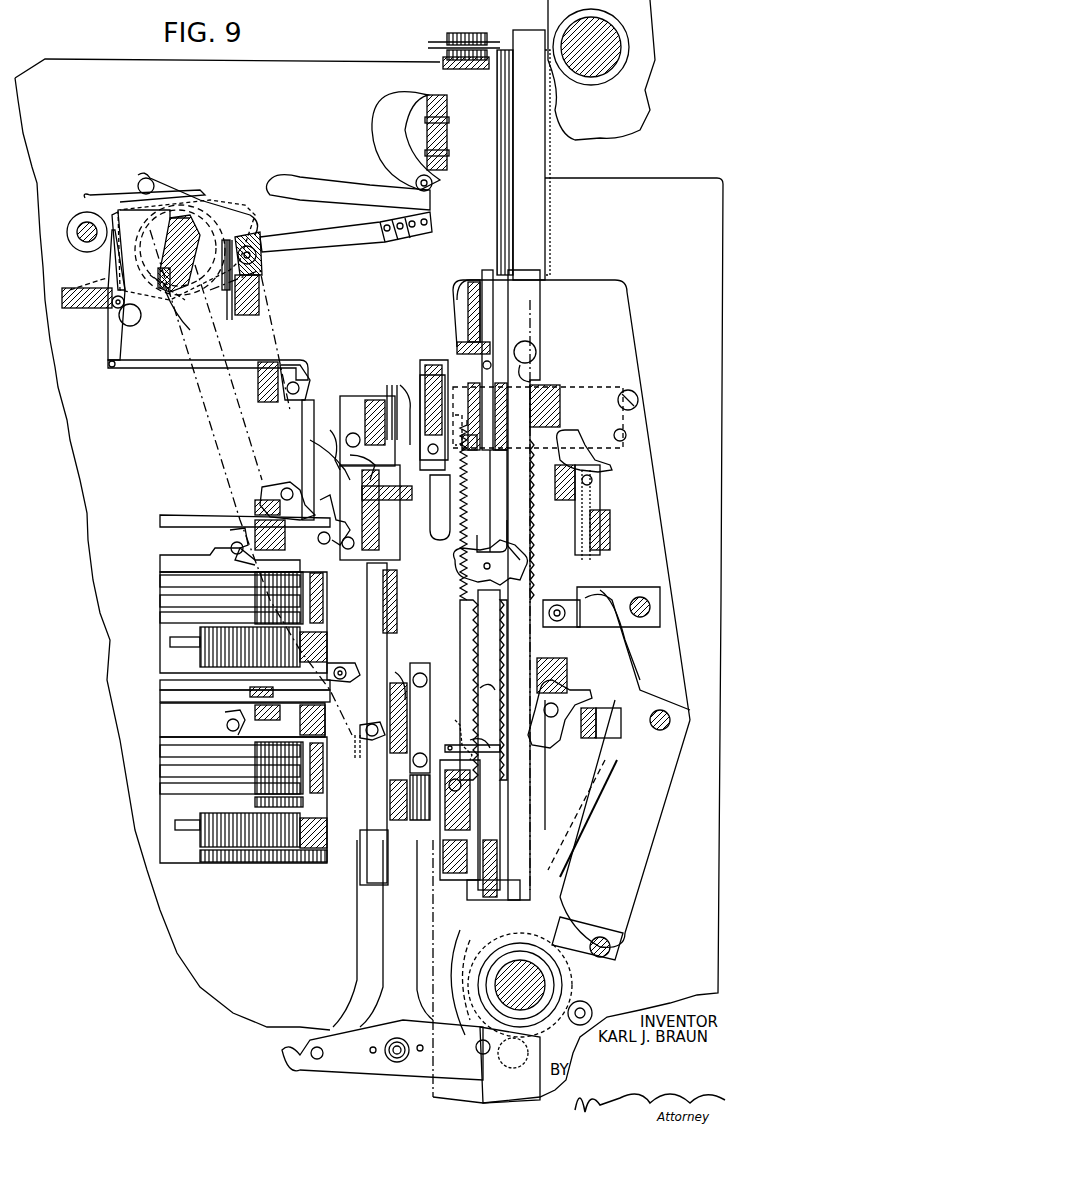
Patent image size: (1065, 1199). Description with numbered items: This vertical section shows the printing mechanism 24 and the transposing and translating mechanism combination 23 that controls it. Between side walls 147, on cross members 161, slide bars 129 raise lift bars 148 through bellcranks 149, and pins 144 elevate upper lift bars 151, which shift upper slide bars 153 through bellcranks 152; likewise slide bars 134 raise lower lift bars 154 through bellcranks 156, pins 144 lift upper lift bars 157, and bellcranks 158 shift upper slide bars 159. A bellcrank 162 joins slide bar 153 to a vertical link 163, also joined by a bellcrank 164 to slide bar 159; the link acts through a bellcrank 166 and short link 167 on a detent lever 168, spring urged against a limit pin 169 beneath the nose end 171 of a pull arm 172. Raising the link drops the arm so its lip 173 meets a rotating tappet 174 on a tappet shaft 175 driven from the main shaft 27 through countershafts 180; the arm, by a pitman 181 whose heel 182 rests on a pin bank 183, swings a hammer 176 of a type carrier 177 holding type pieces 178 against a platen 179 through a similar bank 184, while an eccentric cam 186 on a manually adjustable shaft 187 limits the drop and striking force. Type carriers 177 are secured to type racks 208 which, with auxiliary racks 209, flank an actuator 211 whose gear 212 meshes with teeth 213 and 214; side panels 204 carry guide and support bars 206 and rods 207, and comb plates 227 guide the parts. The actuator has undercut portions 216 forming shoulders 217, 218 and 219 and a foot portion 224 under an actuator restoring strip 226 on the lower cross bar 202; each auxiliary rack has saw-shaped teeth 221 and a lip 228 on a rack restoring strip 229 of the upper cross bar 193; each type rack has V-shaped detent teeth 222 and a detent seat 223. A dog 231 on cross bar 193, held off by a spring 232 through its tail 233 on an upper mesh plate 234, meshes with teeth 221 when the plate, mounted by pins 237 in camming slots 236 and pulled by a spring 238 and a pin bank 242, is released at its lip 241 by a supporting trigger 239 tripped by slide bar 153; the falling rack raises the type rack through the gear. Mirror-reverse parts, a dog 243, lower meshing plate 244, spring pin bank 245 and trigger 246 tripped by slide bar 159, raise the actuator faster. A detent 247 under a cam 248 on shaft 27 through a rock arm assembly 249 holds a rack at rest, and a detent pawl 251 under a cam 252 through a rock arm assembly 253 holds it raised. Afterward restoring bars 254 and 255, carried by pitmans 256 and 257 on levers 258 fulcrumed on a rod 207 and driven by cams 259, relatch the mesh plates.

The shaft assembly 23 is at (158, 512).
The bracket 24 is at (351, 142).
The shaft 27 is at (515, 990).
The bar 129 is at (245, 680).
The plate 134 is at (265, 855).
The gear stack 144 is at (280, 580).
The frame 147 is at (676, 190).
The bar 148 is at (377, 660).
The cylinder 149 is at (230, 655).
The plate 151 is at (170, 566).
The latch 152 is at (228, 535).
The shaft 153 is at (197, 515).
The gear 154 is at (295, 805).
The cylinder 156 is at (228, 830).
The plate 157 is at (168, 745).
The latch 158 is at (225, 723).
The plate 159 is at (170, 703).
The block 161 is at (258, 505).
The lever 162 is at (280, 488).
The bar 163 is at (305, 420).
The pivot 164 is at (350, 690).
The pivot 166 is at (300, 380).
The bar 167 is at (218, 363).
The lever 168 is at (114, 330).
The roller 169 is at (132, 326).
The bracket 171 is at (110, 195).
The cam follower 172 is at (225, 202).
The cam plate 173 is at (172, 215).
The spring 174 is at (182, 310).
The cam 175 is at (170, 254).
The lever 176 is at (305, 185).
The rack bar 177 is at (530, 122).
The rack teeth 178 is at (500, 200).
The roller 179 is at (615, 60).
The link 180 is at (235, 435).
The bar 181 is at (338, 240).
The pivot 182 is at (250, 243).
The spring 183 is at (225, 290).
The coil 184 is at (460, 35).
The bushing 186 is at (82, 213).
The shaft 187 is at (76, 237).
The plunger 193 is at (428, 380).
The block 202 is at (440, 845).
The frame plate 204 is at (640, 512).
The screw 206 is at (447, 140).
The pin 207 is at (640, 597).
The bar 208 is at (510, 797).
The rack 209 is at (465, 548).
The pawl 211 is at (510, 570).
The link 212 is at (500, 550).
The rack 213 is at (495, 712).
The bar 214 is at (462, 520).
The block 216 is at (478, 768).
The spring 217 is at (490, 742).
The spring 218 is at (460, 732).
The spring 219 is at (472, 690).
The bar 221 is at (446, 515).
The plate 222 is at (530, 470).
The rod 223 is at (546, 760).
The block 224 is at (470, 890).
The block 226 is at (440, 868).
The bar 227 is at (432, 582).
The block 228 is at (465, 340).
The bar 229 is at (485, 390).
The bar 231 is at (436, 490).
The spring 232 is at (399, 406).
The block 233 is at (410, 510).
The pin 234 is at (373, 530).
The spring 236 is at (365, 463).
The lever 237 is at (400, 555).
The spring 238 is at (327, 443).
The spring 239 is at (300, 445).
The block 241 is at (366, 420).
The wires 242 is at (385, 390).
The bar 243 is at (470, 760).
The bracket 244 is at (413, 745).
The block 245 is at (395, 800).
The lever 246 is at (365, 750).
The lever 247 is at (545, 735).
The hub 248 is at (478, 985).
The rod 249 is at (580, 850).
The lever 251 is at (560, 463).
The pawl 252 is at (488, 1058).
The arm 253 is at (632, 670).
The bar 254 is at (392, 580).
The spring 255 is at (400, 673).
The arm 256 is at (357, 935).
The arm 257 is at (430, 947).
The lever 258 is at (343, 1060).
The arc 259 is at (440, 1010).